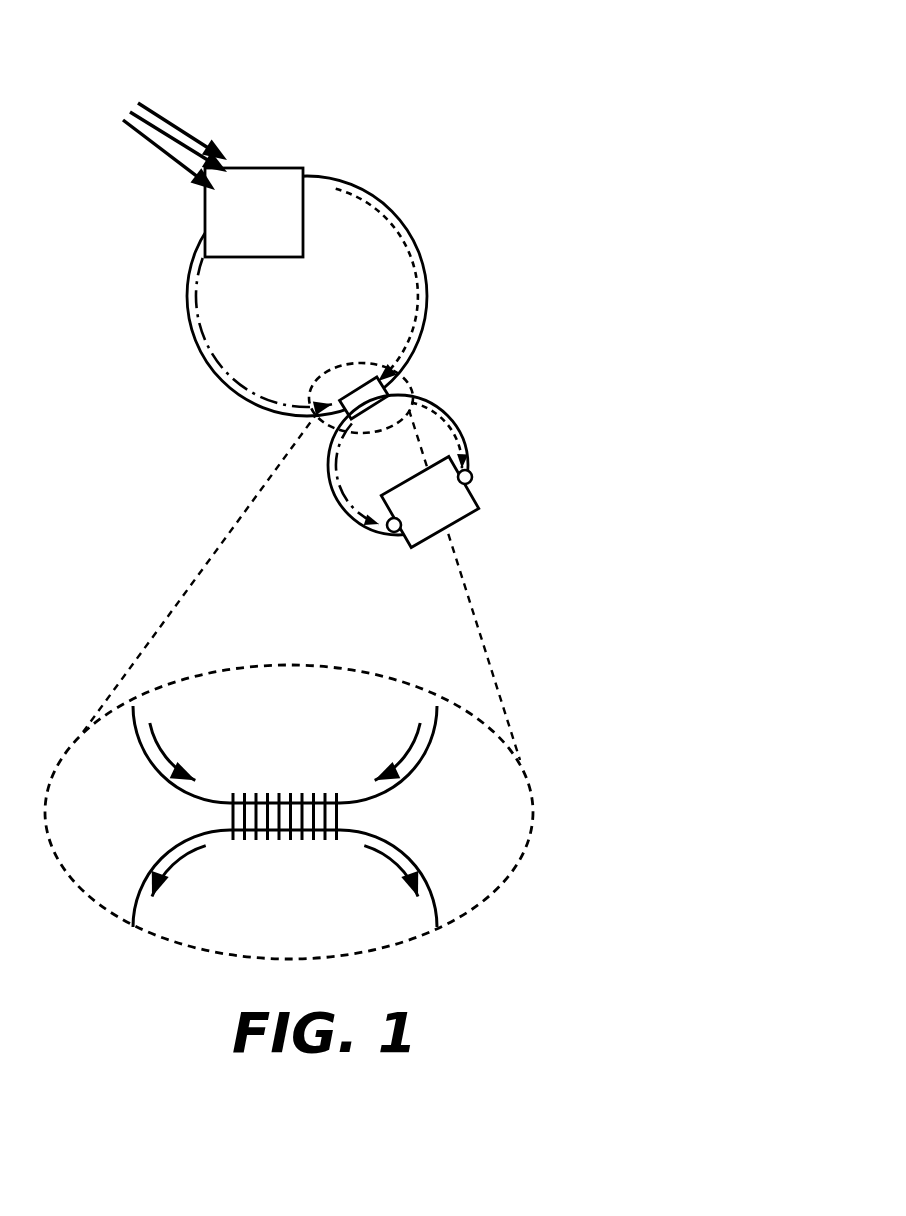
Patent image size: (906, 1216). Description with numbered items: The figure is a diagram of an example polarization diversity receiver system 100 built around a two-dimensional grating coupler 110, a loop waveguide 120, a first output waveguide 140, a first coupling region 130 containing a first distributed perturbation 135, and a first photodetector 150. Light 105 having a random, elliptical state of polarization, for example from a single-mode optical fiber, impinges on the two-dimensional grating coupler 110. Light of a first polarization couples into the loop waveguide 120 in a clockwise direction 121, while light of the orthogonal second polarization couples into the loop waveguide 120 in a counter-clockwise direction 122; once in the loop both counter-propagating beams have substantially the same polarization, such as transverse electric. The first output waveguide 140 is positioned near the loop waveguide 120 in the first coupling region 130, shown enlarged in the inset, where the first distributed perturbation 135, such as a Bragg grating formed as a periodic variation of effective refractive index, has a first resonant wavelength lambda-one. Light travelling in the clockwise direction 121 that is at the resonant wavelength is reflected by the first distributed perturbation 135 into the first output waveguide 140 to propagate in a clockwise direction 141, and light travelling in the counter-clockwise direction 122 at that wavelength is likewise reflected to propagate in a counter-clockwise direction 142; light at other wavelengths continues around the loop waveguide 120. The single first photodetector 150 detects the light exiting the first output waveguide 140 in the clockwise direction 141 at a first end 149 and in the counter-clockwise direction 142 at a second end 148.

The polarization diversity receiver system 100 is at (178, 55).
The light 105 is at (165, 118).
The two-dimensional grating coupler 110 is at (270, 167).
The loop waveguide 120 is at (380, 200).
The clockwise direction 121 is at (390, 235).
The counter-clockwise direction 122 is at (203, 312).
The first coupling region 130 is at (385, 378).
The first distributed perturbation 135 is at (344, 842).
The first output waveguide 140 is at (447, 398).
The clockwise direction 141 is at (455, 430).
The counter-clockwise direction 142 is at (330, 466).
The second end 148 is at (398, 530).
The first end 149 is at (471, 483).
The first photodetector 150 is at (458, 520).